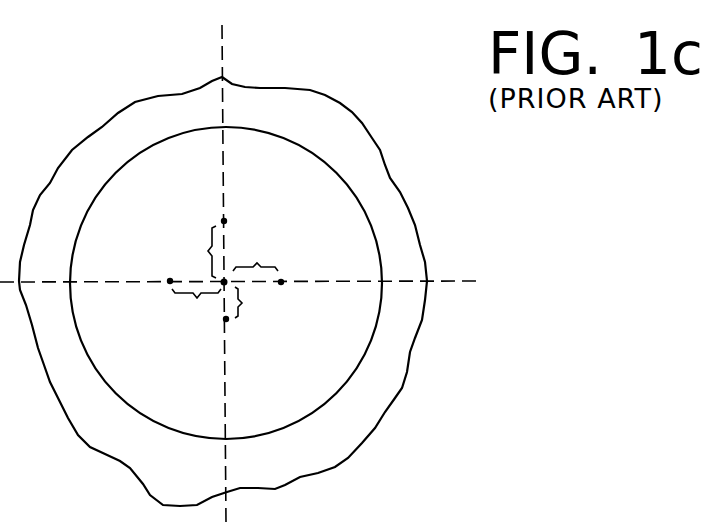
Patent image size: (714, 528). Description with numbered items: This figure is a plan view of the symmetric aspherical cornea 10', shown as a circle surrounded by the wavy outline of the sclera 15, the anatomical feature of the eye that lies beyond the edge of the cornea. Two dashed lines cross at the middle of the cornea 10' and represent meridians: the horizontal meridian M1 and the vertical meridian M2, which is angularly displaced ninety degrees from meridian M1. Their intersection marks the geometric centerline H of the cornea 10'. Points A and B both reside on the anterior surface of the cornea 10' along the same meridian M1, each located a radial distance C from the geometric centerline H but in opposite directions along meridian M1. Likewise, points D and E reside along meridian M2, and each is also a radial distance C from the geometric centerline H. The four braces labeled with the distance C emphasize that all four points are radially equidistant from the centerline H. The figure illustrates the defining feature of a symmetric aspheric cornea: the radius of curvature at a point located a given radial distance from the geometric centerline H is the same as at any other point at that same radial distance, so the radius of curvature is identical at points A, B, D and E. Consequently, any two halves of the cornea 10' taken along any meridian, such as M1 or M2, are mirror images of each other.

The sclera 15 is at (101, 144).
The symmetric aspherical cornea 10' is at (284, 283).
The meridian M1 is at (437, 280).
The meridian M2 is at (222, 40).
The geometric centerline H is at (224, 282).
The point A is at (170, 281).
The point B is at (281, 282).
The point D is at (224, 221).
The point E is at (226, 319).
The radial distance C is at (225, 276).